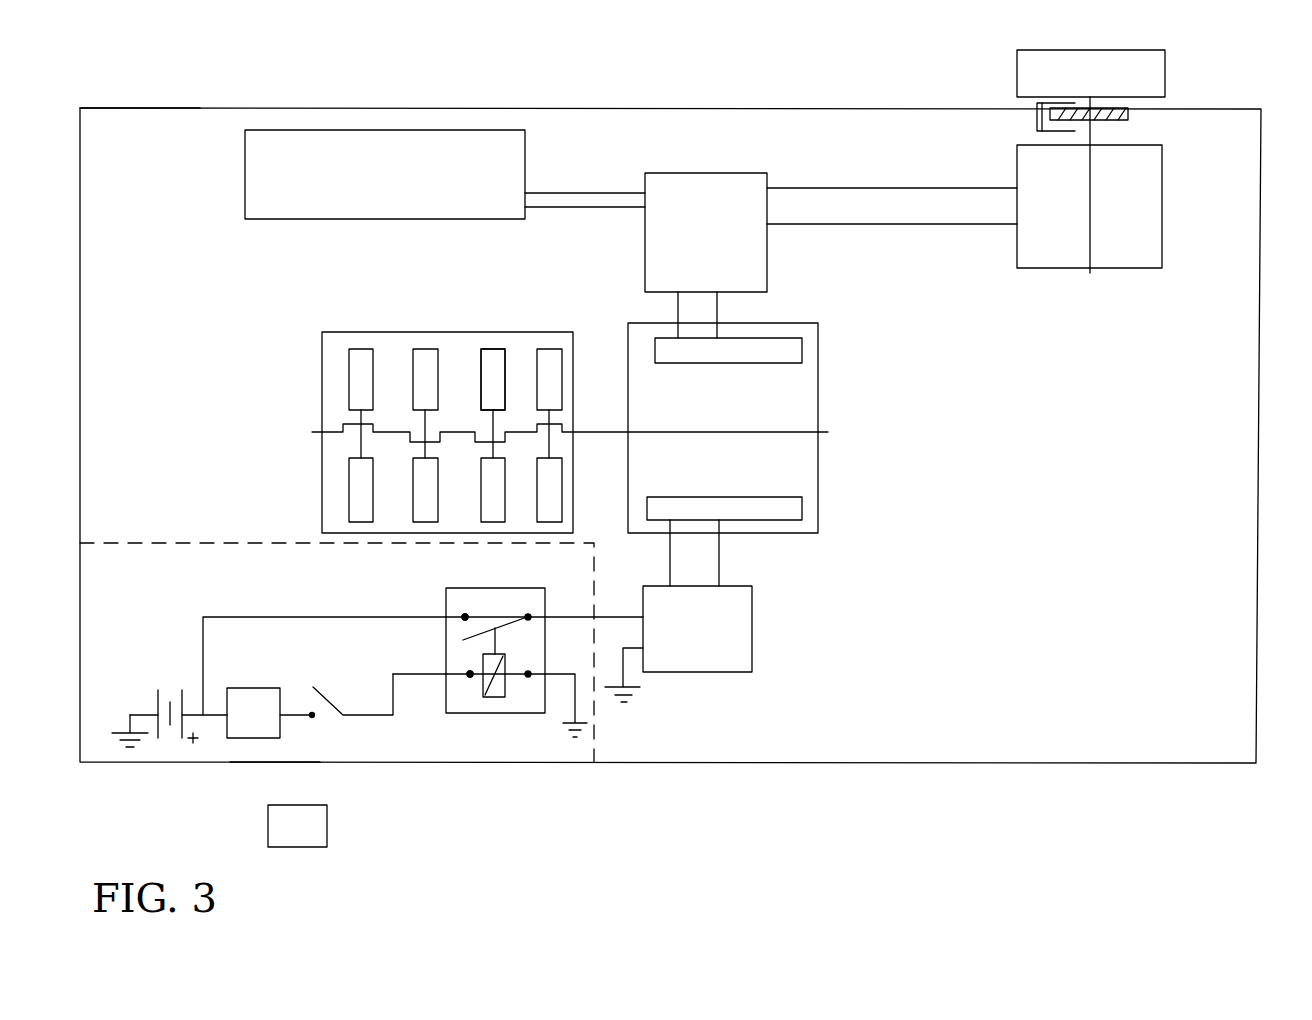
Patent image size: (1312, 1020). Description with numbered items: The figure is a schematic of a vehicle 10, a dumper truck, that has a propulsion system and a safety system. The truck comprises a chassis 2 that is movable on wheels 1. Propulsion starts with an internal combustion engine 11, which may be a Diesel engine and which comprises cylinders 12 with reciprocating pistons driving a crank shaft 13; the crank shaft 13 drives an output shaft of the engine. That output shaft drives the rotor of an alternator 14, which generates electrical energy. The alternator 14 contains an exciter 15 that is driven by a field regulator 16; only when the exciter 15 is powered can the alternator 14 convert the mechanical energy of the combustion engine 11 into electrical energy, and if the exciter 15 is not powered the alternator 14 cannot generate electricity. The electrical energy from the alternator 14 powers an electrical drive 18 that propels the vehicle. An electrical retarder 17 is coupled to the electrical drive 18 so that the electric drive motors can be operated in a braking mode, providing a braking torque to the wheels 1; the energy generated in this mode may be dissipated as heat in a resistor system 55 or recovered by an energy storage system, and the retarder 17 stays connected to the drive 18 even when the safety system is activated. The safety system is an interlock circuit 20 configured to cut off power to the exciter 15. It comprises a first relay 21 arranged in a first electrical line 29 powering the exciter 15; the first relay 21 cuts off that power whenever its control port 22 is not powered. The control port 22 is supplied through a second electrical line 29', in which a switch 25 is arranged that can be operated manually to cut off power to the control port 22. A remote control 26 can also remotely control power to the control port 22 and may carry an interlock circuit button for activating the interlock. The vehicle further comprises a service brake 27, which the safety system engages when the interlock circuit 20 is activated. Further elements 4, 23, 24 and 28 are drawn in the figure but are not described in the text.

The wheels 1 is at (1133, 62).
The chassis 2 is at (1243, 517).
The wall 4 is at (269, 750).
The vehicle 10 is at (127, 127).
The internal combustion engine 11 is at (398, 350).
The cylinders 12 is at (491, 376).
The crank shaft 13 is at (352, 440).
The alternator 14 is at (800, 398).
The exciter 15 is at (800, 511).
The field regulator 16 is at (740, 630).
The electrical retarder 17 is at (646, 183).
The electrical drive 18 is at (1150, 219).
The interlock circuit 20 is at (108, 565).
The first relay 21 is at (555, 713).
The control port 22 is at (439, 683).
The battery 23 is at (150, 692).
The switch 24 is at (332, 727).
The switch 25 is at (244, 742).
The remote control 26 is at (322, 829).
The service brake 27 is at (1030, 121).
The relay contact 28 is at (443, 610).
The first electrical line 29 is at (324, 640).
The second electrical line 29' is at (400, 655).
The resistor system 55 is at (388, 158).